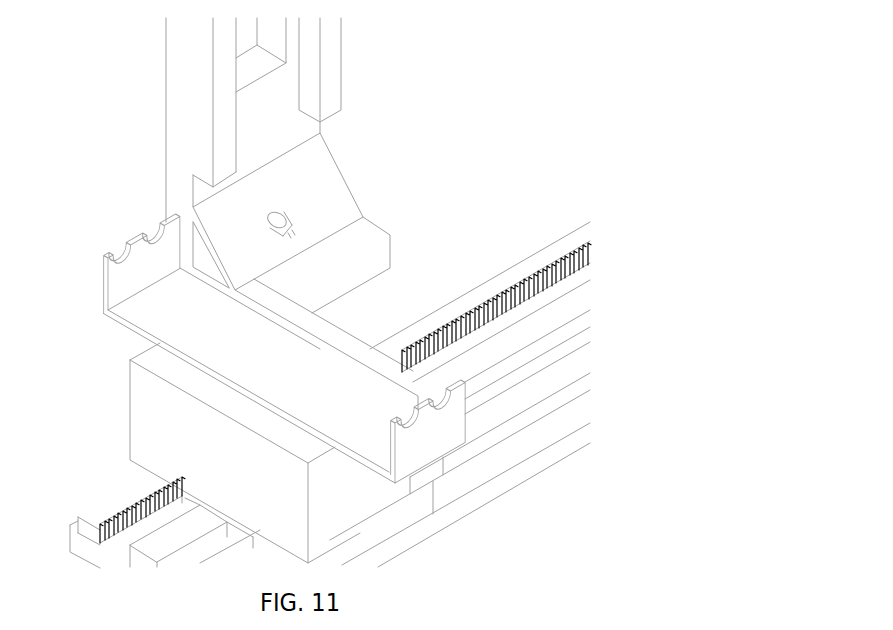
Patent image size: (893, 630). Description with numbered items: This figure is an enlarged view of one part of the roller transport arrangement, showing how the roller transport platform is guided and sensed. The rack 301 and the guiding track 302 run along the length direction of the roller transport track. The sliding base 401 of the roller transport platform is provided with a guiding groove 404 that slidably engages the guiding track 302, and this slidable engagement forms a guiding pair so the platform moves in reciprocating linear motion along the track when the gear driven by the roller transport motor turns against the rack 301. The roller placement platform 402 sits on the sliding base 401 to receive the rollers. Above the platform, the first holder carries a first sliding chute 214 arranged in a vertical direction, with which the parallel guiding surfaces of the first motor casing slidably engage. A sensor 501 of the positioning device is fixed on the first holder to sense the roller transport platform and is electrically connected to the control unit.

The first sliding chute 214 is at (262, 72).
The rack 301 is at (113, 507).
The guiding track 302 is at (522, 337).
The sliding base 401 is at (147, 433).
The roller placement platform 402 is at (118, 290).
The guiding groove 404 is at (130, 250).
The sensor 501 is at (292, 206).